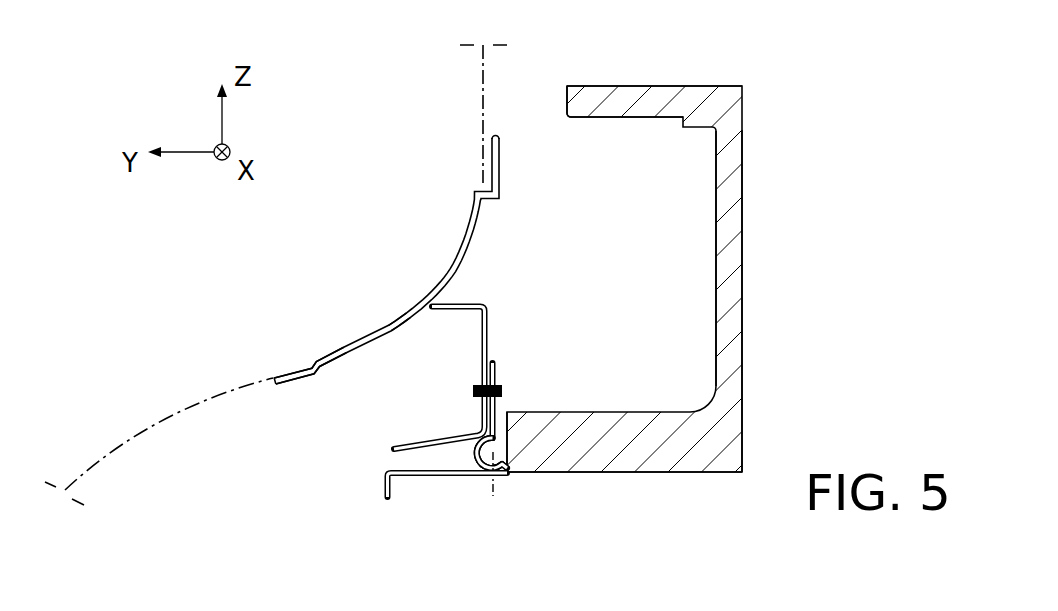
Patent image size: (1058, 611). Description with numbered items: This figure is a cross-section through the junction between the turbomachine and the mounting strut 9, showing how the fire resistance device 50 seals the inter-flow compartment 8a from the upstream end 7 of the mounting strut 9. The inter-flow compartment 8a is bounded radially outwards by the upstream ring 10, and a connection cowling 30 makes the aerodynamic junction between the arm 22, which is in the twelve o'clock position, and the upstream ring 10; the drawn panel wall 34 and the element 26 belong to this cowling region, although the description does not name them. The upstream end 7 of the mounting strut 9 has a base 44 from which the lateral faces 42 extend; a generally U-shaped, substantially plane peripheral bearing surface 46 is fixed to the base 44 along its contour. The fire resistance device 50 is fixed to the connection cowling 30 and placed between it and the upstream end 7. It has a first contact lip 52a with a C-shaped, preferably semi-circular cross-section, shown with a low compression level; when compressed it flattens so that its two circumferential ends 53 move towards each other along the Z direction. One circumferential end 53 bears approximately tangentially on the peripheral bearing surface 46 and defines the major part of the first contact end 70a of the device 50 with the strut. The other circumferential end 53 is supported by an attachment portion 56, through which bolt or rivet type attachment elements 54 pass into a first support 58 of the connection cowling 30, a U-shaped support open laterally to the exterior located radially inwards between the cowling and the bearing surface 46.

The upstream end of the mounting strut 7 is at (727, 128).
The mounting strut 9 is at (752, 227).
The lateral face 42 is at (565, 98).
The base 44 is at (655, 457).
The upstream ring 10 is at (183, 410).
The arm 22 is at (480, 85).
The panel 26 is at (379, 244).
The connection cowling 30 is at (333, 350).
The panel wall 34 is at (390, 330).
The peripheral bearing surface 46 is at (423, 478).
The fire resistance device 50 is at (518, 370).
The first contact lip 52a is at (474, 440).
The circumferential ends 53 is at (509, 470).
The attachment elements 54 is at (504, 392).
The attachment portion 56 is at (494, 366).
The first support 58 is at (487, 327).
The first contact end 70a is at (495, 495).
The inter-flow compartment 8a is at (456, 379).